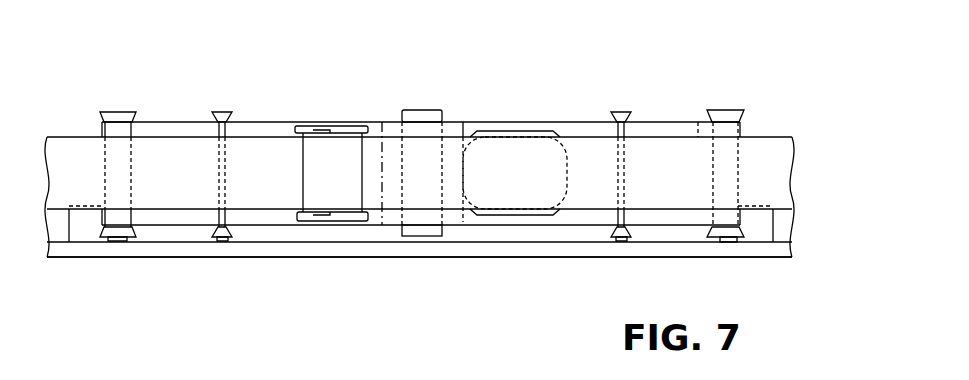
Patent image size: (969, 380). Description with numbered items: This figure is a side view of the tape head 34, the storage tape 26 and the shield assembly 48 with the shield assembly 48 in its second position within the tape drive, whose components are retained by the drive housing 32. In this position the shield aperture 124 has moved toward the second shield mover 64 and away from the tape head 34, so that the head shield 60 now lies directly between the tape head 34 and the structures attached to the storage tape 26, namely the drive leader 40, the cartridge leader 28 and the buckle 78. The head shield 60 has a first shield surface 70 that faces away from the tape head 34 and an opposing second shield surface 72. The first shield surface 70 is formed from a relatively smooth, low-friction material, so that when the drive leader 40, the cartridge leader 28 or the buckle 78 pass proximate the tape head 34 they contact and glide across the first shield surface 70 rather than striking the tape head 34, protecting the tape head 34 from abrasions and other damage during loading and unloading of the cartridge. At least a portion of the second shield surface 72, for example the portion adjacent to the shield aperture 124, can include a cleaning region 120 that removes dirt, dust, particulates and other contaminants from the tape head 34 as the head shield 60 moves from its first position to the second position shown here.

The storage tape 26 is at (763, 147).
The cartridge leader 28 is at (393, 198).
The drive housing 32 is at (160, 250).
The tape head 34 is at (427, 110).
The drive leader 40 is at (263, 195).
The shield assembly 48 is at (258, 97).
The head shield 60 is at (183, 122).
The second shield mover 64 is at (726, 110).
The first shield surface 70 is at (650, 122).
The second shield surface 72 is at (698, 122).
The buckle 78 is at (331, 126).
The cleaning region 120 is at (389, 128).
The shield aperture 124 is at (525, 131).